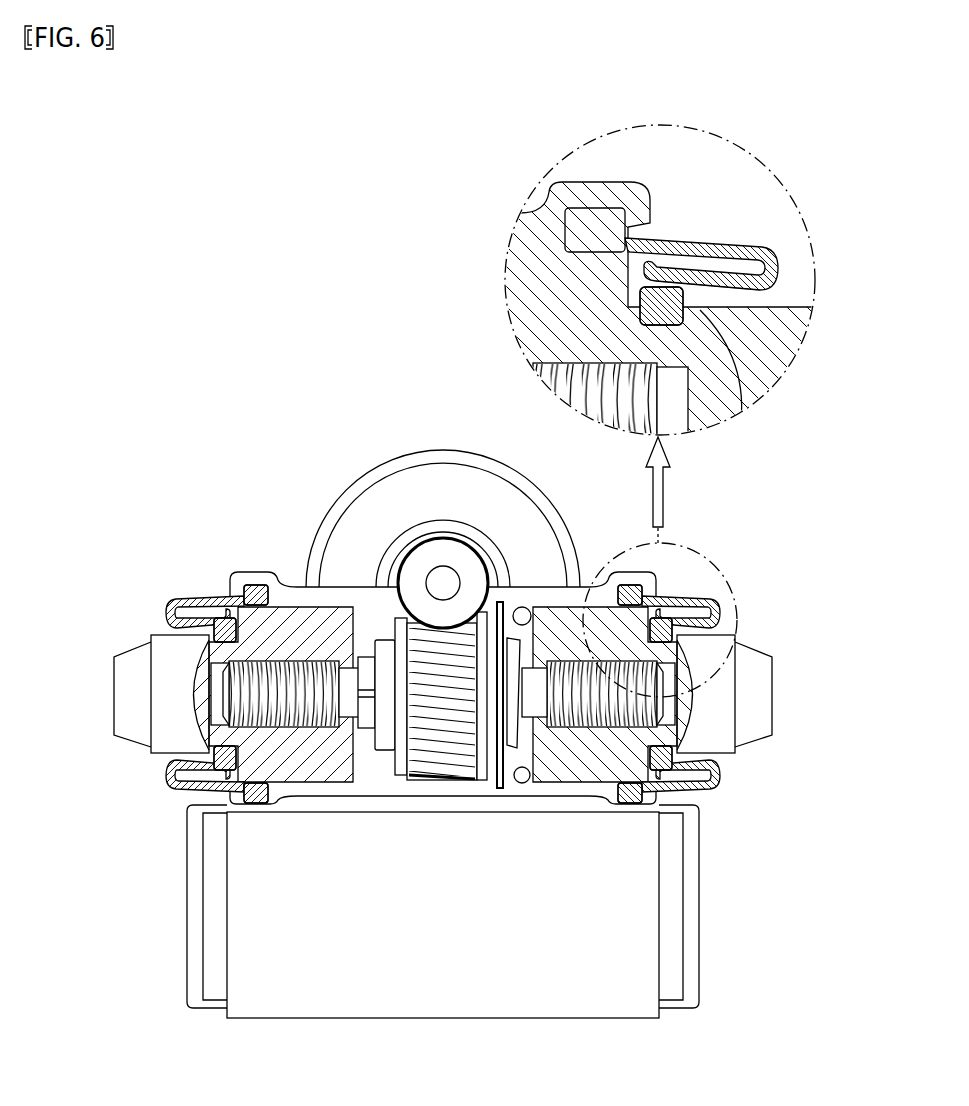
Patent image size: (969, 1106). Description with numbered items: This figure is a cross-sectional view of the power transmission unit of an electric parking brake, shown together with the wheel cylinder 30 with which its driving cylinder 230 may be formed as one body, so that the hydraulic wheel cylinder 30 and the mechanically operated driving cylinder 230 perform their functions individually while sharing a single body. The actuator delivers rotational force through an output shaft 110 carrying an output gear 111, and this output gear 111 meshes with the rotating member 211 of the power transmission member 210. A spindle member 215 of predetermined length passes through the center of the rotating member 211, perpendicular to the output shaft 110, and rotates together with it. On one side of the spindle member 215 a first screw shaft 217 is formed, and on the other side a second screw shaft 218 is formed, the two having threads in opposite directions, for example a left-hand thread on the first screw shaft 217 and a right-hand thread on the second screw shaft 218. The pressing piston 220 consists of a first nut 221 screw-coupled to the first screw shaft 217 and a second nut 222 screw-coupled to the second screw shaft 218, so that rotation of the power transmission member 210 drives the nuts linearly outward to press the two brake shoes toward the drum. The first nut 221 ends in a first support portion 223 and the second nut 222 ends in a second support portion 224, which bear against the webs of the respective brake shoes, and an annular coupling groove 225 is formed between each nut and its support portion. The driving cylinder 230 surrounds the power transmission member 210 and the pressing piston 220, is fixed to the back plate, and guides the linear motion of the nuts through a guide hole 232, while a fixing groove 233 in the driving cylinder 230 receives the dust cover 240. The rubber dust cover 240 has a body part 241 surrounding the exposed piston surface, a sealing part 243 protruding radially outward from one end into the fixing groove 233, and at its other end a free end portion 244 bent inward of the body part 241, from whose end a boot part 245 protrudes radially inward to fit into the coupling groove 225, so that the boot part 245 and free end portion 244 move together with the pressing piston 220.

The wheel cylinder 30 is at (498, 1004).
The output shaft 110 is at (443, 578).
The output gear 111 is at (428, 545).
The power transmission member 210 is at (410, 769).
The rotating member 211 is at (442, 768).
The spindle member 215 is at (361, 746).
The first screw shaft 217 is at (303, 730).
The second screw shaft 218 is at (598, 730).
The pressing piston 220 is at (443, 693).
The first nut 221 is at (298, 612).
The second nut 222 is at (578, 762).
The first support portion 223 is at (122, 711).
The second support portion 224 is at (762, 712).
The coupling groove 225 is at (705, 335).
The driving cylinder 230 is at (545, 598).
The guide hole 232 is at (522, 607).
The fixing groove 233 is at (612, 206).
The dust cover 240 is at (196, 590).
The body part 241 is at (718, 246).
The sealing part 243 is at (645, 224).
The free end portion 244 is at (770, 272).
The boot part 245 is at (686, 297).